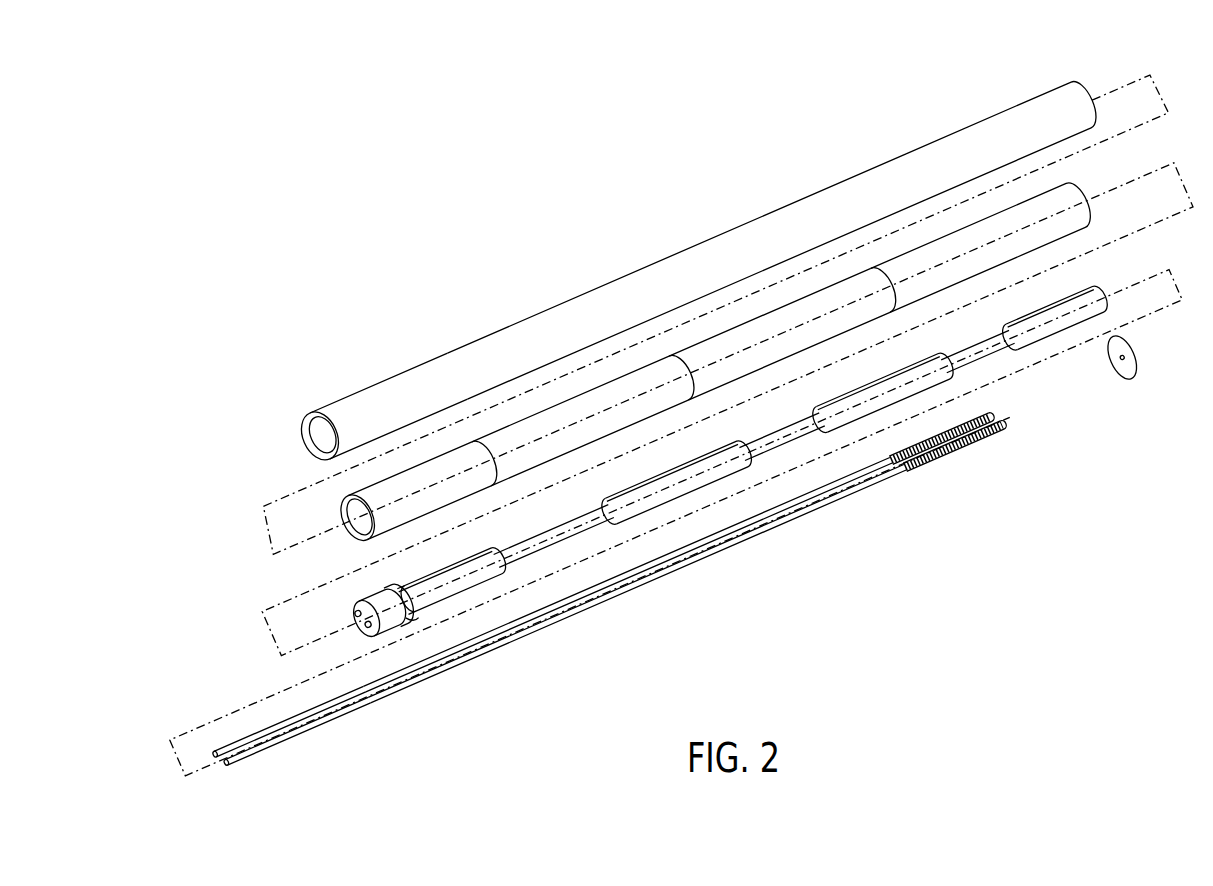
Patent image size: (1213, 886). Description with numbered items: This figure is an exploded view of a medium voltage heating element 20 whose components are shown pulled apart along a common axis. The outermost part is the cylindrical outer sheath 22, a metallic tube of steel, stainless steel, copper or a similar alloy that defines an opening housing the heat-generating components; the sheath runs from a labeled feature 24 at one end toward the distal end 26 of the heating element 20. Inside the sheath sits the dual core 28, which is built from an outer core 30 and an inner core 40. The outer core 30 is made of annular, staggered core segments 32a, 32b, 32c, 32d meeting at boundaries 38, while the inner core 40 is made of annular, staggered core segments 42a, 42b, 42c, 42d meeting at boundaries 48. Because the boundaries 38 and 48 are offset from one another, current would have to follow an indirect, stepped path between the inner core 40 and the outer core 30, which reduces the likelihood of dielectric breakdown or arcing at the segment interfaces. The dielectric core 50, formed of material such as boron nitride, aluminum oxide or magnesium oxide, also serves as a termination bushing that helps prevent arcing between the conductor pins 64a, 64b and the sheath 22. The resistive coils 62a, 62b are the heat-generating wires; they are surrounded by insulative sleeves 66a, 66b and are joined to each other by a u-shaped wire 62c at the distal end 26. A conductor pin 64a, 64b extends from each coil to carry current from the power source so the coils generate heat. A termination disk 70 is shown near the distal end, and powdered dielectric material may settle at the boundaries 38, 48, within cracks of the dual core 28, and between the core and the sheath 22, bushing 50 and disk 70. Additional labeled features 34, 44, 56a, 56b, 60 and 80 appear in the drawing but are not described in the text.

The medium voltage heating element 20 is at (633, 175).
The outer sheath 22 is at (905, 154).
The first end of outer tube 24 is at (334, 386).
The distal end 26 is at (1042, 88).
The dual core 28 is at (244, 583).
The outer core 30 is at (1088, 182).
The outer core segment 32a is at (397, 490).
The outer core segment 32b is at (580, 400).
The outer core segment 32c is at (765, 323).
The outer core segment 32d is at (958, 235).
The ring end of intermediate tube 34 is at (347, 502).
The staggered boundary 38 is at (486, 452).
The inner core 40 is at (1106, 277).
The inner core segment 42a is at (473, 580).
The inner core segment 42b is at (677, 483).
The inner core segment 42c is at (850, 412).
The inner core segment 42d is at (1063, 322).
The inner core tube 44 is at (550, 527).
The staggered boundary 48 is at (413, 603).
The dielectric core 50 is at (360, 603).
The first connector port 56a is at (352, 612).
The second connector port 56b is at (357, 625).
The optical fiber cable 60 is at (411, 705).
The resistive coil 62a is at (990, 412).
The resistive coil 62b is at (977, 438).
The u-shaped wire 62c is at (1005, 412).
The conductor pin 64a is at (543, 610).
The conductor pin 64b is at (643, 583).
The insulative sleeve 66a is at (293, 723).
The insulative sleeve 66b is at (340, 712).
The termination disk 70 is at (1127, 368).
The connector tab 80 is at (410, 622).